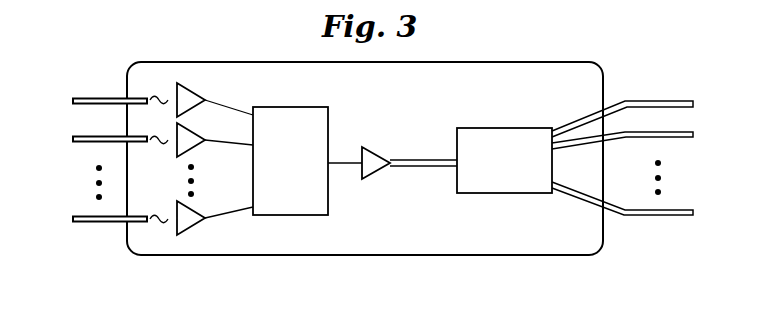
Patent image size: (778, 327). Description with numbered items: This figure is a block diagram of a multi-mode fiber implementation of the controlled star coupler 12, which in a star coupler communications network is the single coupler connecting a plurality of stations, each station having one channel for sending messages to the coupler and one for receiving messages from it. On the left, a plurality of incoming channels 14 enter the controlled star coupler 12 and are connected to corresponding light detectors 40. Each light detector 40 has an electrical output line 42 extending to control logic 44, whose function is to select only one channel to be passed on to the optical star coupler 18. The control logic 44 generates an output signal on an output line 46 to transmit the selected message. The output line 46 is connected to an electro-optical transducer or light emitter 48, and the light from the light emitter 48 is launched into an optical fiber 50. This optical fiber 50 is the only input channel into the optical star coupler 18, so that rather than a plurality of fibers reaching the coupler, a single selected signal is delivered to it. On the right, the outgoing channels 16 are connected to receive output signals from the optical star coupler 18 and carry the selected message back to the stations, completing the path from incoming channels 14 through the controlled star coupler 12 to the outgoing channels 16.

The controlled star coupler 12 is at (548, 62).
The incoming channels 14 is at (82, 215).
The outgoing channels 16 is at (678, 208).
The optical star coupler 18 is at (508, 128).
The light detectors 40 is at (199, 134).
The electrical output line 42 is at (216, 139).
The control logic 44 is at (328, 204).
The output line 46 is at (340, 162).
The light emitter 48 is at (382, 152).
The optical fiber 50 is at (434, 168).